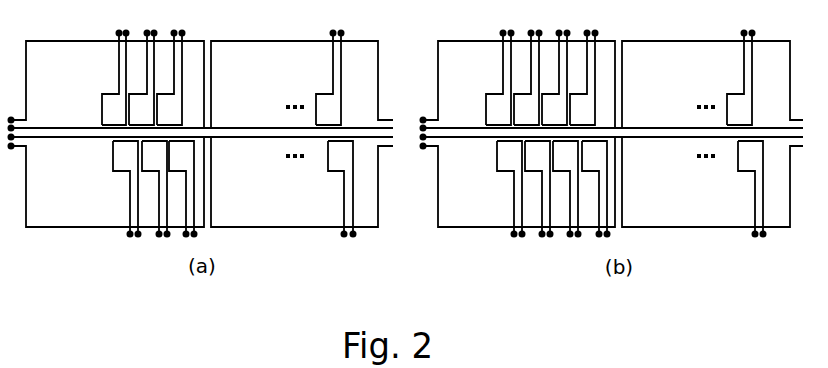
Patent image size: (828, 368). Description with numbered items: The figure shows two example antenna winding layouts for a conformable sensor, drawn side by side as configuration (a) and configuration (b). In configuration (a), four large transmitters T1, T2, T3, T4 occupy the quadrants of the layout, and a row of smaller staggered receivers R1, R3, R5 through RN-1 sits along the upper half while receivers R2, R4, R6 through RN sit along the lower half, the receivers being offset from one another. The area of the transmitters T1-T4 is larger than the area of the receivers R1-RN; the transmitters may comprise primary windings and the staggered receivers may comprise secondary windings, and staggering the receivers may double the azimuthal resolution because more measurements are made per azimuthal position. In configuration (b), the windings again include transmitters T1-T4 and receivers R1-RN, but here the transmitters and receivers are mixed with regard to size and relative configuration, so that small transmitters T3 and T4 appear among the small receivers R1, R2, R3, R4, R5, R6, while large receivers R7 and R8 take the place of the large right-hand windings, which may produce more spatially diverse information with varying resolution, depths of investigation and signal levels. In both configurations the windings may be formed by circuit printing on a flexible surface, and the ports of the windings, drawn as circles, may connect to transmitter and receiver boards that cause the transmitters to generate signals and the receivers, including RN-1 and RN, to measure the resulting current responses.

The transmitter T1 is at (313, 84).
The transmitter T2 is at (313, 182).
The transmitter T3 is at (391, 79).
The transmitter T4 is at (396, 187).
The receiver R1 is at (308, 78).
The receiver R2 is at (319, 189).
The receiver R3 is at (336, 78).
The receiver R4 is at (348, 189).
The receiver R5 is at (378, 78).
The receiver R6 is at (390, 189).
The receiver R7 is at (712, 84).
The receiver R8 is at (712, 182).
The receiver RN-1 is at (537, 78).
The receiver RN is at (547, 189).